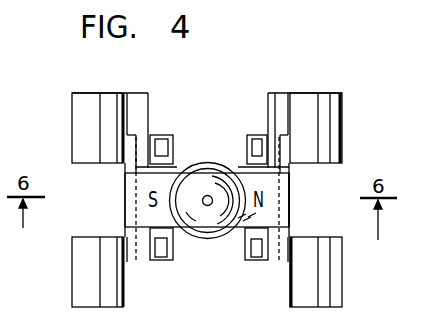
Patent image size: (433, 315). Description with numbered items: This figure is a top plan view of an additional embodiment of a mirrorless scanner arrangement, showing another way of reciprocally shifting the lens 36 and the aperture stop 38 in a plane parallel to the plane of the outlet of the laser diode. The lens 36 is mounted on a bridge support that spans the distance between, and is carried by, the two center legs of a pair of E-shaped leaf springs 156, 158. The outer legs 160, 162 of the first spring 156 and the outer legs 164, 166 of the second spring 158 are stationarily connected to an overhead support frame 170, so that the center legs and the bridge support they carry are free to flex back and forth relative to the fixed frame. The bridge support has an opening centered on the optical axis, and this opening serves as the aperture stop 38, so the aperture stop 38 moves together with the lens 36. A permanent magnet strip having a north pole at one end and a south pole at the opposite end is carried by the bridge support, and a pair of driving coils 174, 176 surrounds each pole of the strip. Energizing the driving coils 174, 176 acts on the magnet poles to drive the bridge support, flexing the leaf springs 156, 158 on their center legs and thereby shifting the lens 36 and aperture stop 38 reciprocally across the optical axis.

The lens 36 is at (213, 230).
The aperture stop 38 is at (209, 196).
The E-shaped leaf spring 156 is at (290, 200).
The E-shaped leaf spring 158 is at (125, 192).
The outer leg 160 is at (283, 161).
The outer leg 162 is at (283, 247).
The outer leg 164 is at (126, 142).
The outer leg 166 is at (133, 255).
The overhead support frame 170 is at (312, 95).
The driving coil 174 is at (257, 137).
The driving coil 176 is at (162, 138).